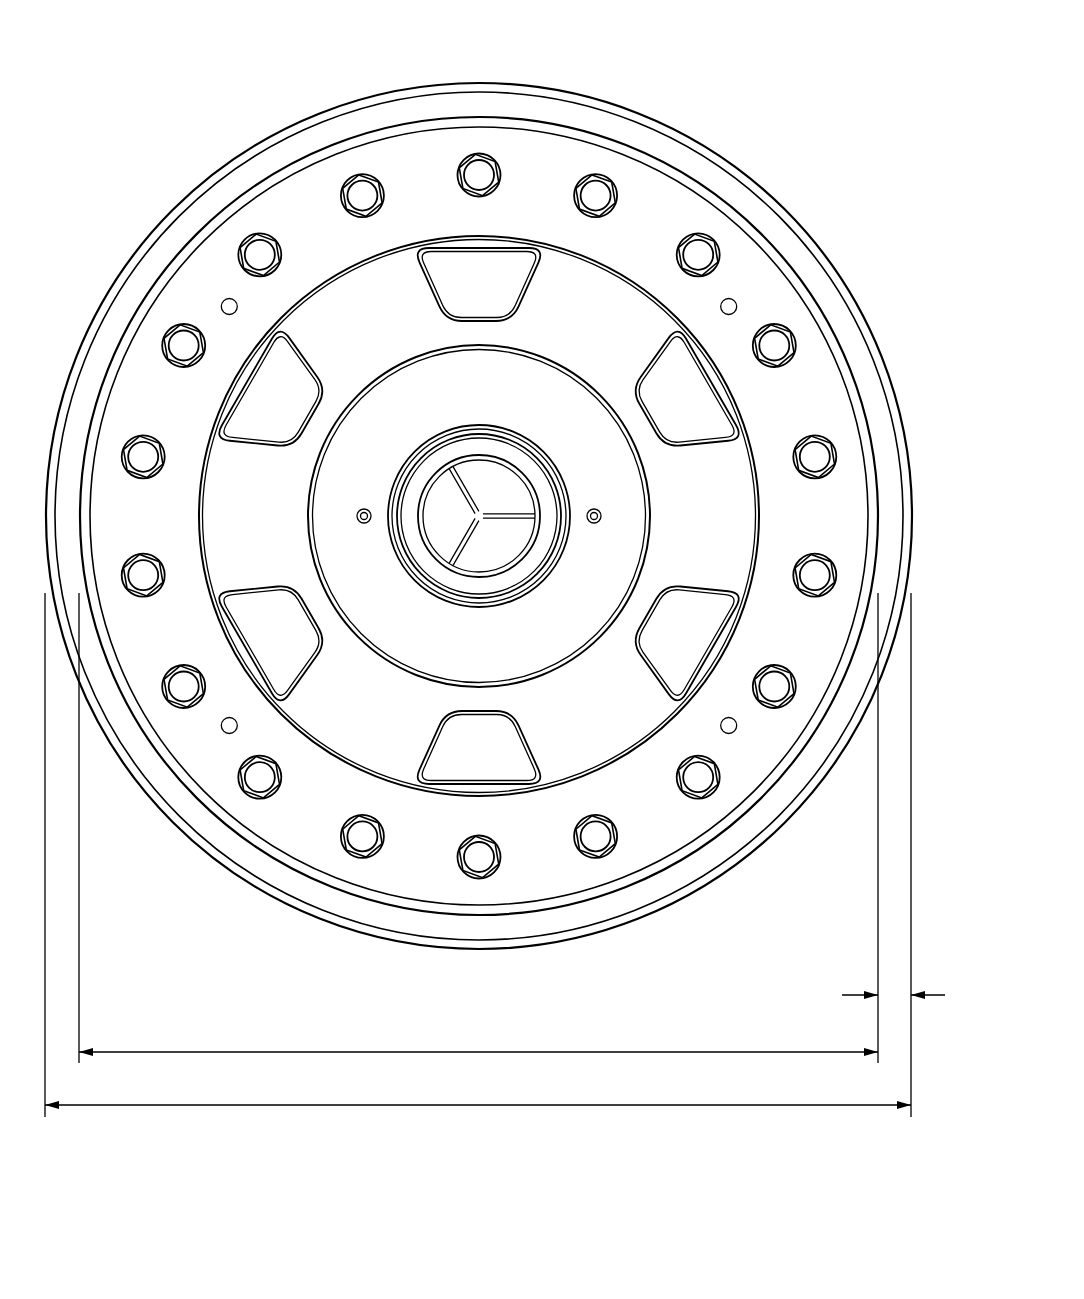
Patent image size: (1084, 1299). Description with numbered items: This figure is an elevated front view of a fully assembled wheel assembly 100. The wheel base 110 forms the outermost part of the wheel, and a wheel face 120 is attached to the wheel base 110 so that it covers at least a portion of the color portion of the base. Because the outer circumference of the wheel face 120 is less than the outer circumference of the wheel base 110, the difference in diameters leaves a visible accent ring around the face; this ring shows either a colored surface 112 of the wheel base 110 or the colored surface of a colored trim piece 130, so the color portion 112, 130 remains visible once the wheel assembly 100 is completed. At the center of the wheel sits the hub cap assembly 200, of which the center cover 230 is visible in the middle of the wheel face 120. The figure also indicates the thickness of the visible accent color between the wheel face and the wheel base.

The wheel assembly 100 is at (268, 58).
The wheel base 110 is at (832, 267).
The colored surface 112 is at (773, 228).
The colored trim piece 130 is at (483, 516).
The wheel face 120 is at (827, 405).
The hub cap assembly 200 is at (294, 507).
The center cover 230 is at (442, 498).